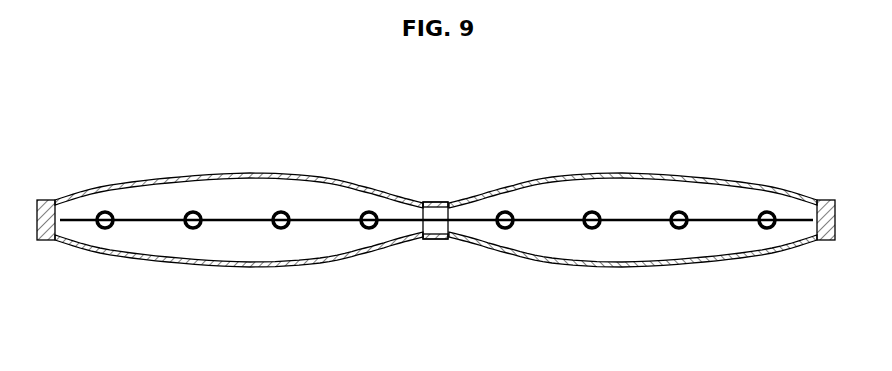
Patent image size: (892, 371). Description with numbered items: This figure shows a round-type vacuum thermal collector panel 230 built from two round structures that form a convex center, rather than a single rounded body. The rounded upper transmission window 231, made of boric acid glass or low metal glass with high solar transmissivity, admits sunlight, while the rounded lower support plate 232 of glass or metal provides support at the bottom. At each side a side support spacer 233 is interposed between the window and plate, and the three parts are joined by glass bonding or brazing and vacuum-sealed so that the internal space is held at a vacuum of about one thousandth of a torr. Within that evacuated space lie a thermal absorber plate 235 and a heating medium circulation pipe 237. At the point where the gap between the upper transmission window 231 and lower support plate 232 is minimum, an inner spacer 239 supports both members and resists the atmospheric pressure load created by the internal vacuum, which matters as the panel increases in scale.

The round-type vacuum thermal collector panel 230 is at (642, 152).
The upper transmission window 231 is at (168, 178).
The lower support plate 232 is at (162, 262).
The side support spacer 233 is at (825, 237).
The thermal absorber plate 235 is at (235, 222).
The heating medium circulation pipe 237 is at (590, 231).
The inner spacer 239 is at (437, 226).